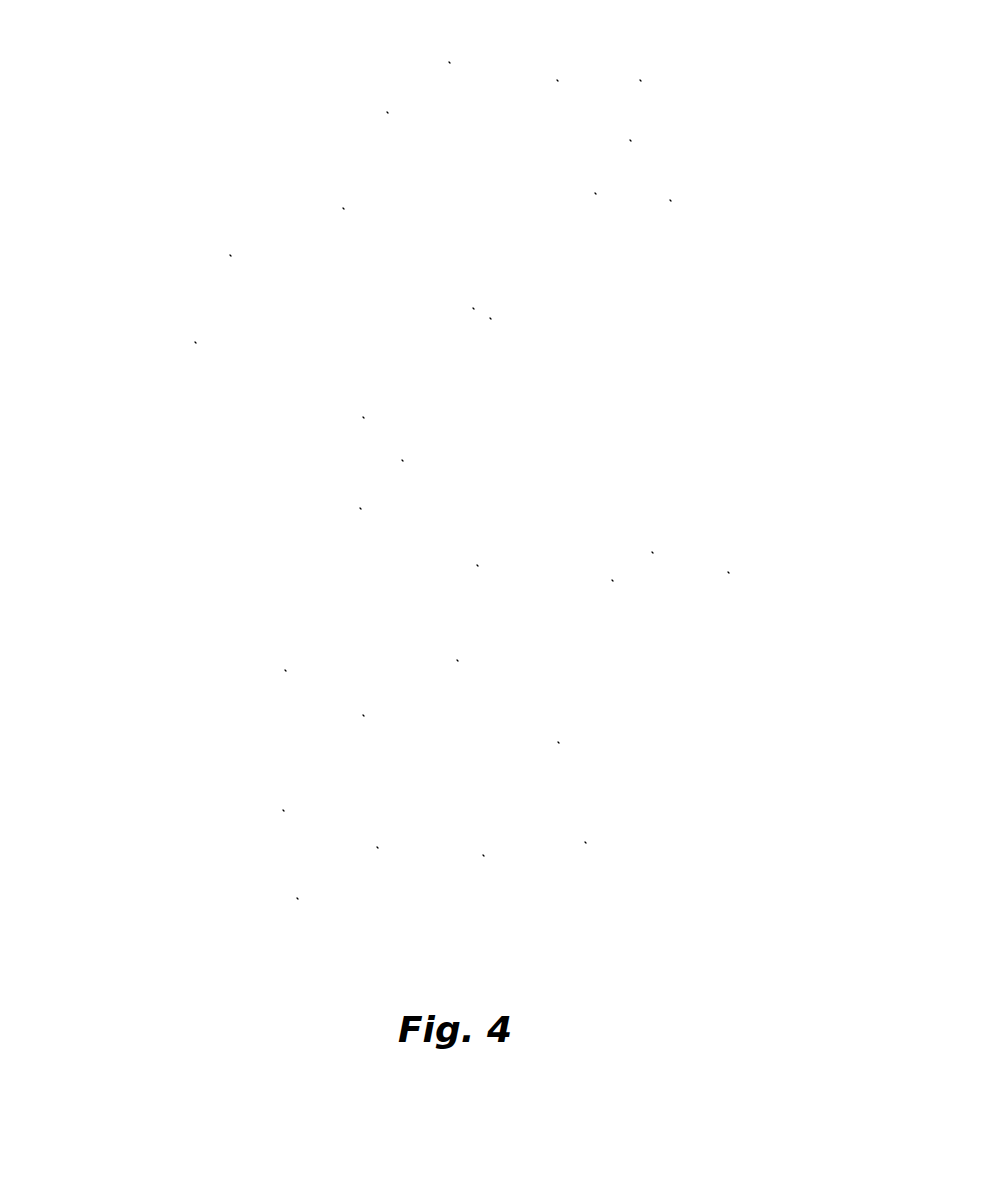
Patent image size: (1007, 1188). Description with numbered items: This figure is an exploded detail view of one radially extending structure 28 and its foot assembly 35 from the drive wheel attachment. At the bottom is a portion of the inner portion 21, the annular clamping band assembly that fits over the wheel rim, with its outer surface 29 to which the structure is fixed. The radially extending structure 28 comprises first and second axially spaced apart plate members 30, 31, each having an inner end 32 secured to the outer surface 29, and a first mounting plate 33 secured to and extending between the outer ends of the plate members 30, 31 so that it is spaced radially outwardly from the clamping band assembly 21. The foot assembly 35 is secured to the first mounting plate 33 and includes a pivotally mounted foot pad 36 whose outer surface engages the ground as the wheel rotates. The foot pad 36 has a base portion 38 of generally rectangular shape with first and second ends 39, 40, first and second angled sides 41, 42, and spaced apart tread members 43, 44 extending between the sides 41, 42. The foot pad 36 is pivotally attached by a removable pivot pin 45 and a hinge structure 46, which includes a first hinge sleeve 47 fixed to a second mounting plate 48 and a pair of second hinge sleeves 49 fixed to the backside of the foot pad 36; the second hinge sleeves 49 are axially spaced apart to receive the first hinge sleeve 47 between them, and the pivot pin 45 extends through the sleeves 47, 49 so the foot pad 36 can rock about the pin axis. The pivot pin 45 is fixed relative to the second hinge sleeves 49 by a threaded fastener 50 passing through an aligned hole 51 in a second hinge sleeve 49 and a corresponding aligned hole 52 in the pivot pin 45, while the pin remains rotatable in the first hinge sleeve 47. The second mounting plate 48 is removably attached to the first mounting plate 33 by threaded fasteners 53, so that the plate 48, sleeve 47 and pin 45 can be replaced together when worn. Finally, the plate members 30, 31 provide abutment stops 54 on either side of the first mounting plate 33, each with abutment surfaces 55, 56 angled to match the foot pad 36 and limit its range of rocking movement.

The inner portion 21 is at (297, 898).
The radially extending structure 28 is at (558, 742).
The outer surface 29 is at (585, 842).
The first plate member 30 is at (377, 847).
The second plate member 31 is at (283, 810).
The inner end 32 is at (483, 855).
The first mounting plate 33 is at (457, 660).
The foot assembly 35 is at (643, 78).
The foot pad 36 is at (387, 112).
The base portion 38 is at (630, 140).
The first end 39 is at (195, 342).
The second end 40 is at (557, 80).
The first angled side 41 is at (449, 62).
The second angled side 42 is at (670, 200).
The tread member 43 is at (230, 255).
The tread member 44 is at (595, 193).
The pivot pin 45 is at (728, 572).
The hinge structure 46 is at (467, 483).
The first hinge sleeve 47 is at (402, 460).
The second mounting plate 48 is at (360, 508).
The second hinge sleeve 49 is at (343, 208).
The threaded fastener 50 is at (612, 580).
The aligned hole 51 is at (473, 308).
The aligned hole 52 is at (652, 552).
The threaded fastener 53 is at (363, 417).
The abutment stop 54 is at (535, 600).
The abutment surface 55 is at (285, 670).
The abutment surface 56 is at (363, 715).